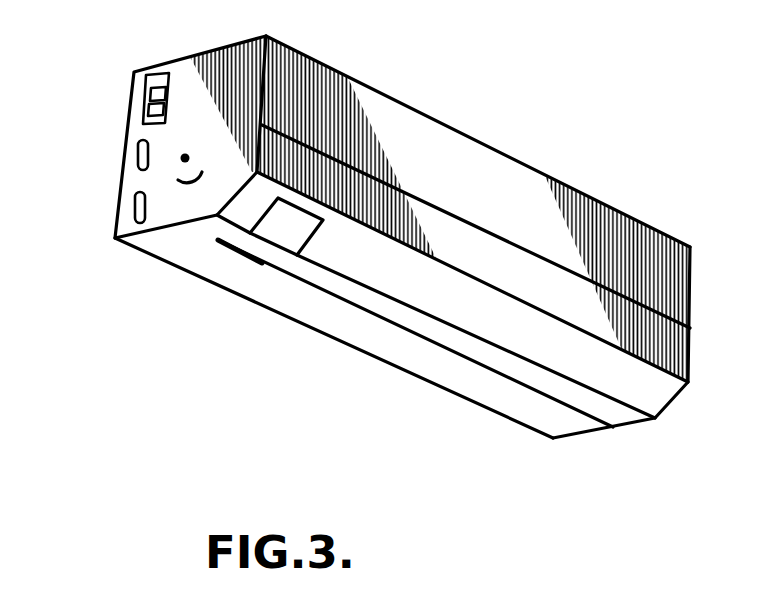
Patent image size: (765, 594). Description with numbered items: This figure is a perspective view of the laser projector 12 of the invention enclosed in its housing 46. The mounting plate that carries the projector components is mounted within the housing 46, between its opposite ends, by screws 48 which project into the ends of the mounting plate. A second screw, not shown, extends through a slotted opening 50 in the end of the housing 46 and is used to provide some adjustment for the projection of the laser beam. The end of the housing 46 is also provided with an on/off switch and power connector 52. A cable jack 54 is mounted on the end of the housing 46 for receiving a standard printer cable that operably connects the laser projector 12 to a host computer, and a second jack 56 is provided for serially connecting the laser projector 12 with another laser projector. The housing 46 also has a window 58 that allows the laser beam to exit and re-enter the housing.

The laser projector 12 is at (446, 102).
The housing 46 is at (568, 183).
The screws 48 is at (180, 158).
The slotted opening 50 is at (190, 187).
The on/off switch and power connector 52 is at (145, 110).
The cable jack 54 is at (138, 160).
The second jack 56 is at (135, 213).
The window 58 is at (275, 238).